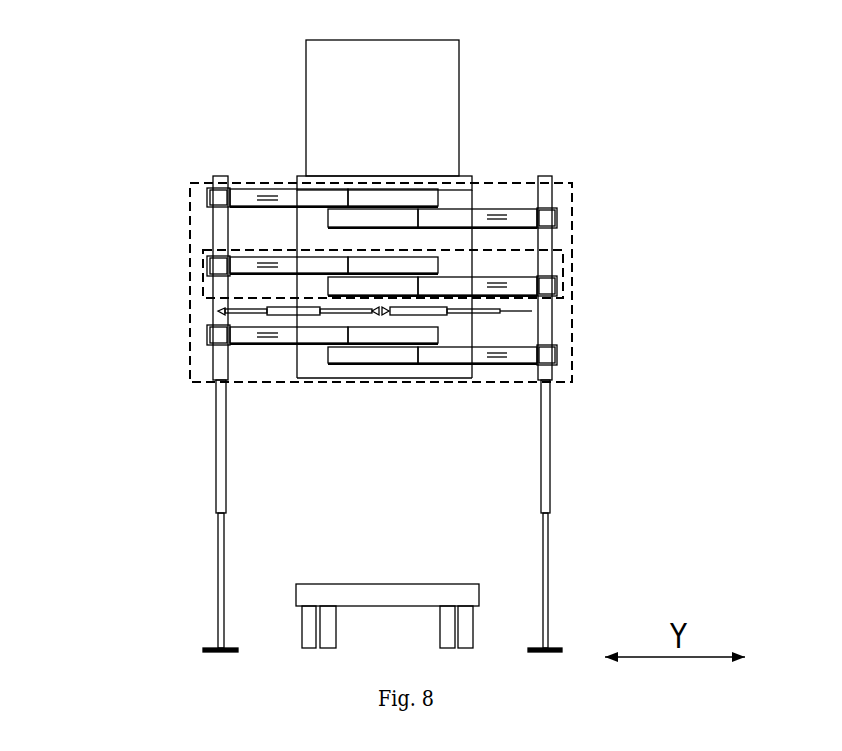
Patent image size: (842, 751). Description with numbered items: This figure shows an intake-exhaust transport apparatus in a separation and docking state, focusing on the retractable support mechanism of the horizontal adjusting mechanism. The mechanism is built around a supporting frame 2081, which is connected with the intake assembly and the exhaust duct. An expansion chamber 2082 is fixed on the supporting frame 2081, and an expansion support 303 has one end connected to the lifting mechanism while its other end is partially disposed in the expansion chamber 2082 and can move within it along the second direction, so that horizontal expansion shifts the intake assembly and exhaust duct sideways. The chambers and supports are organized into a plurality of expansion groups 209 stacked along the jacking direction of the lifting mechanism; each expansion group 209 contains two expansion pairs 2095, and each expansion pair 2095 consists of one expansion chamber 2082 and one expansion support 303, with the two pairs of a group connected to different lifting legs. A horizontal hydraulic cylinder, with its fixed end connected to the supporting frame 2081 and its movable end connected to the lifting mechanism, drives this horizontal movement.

The supporting frame 2081 is at (298, 212).
The expansion chamber 2082 is at (383, 177).
The expansion support 303 is at (512, 178).
The expansion group 209 is at (563, 275).
The expansion pair 2095 is at (293, 335).